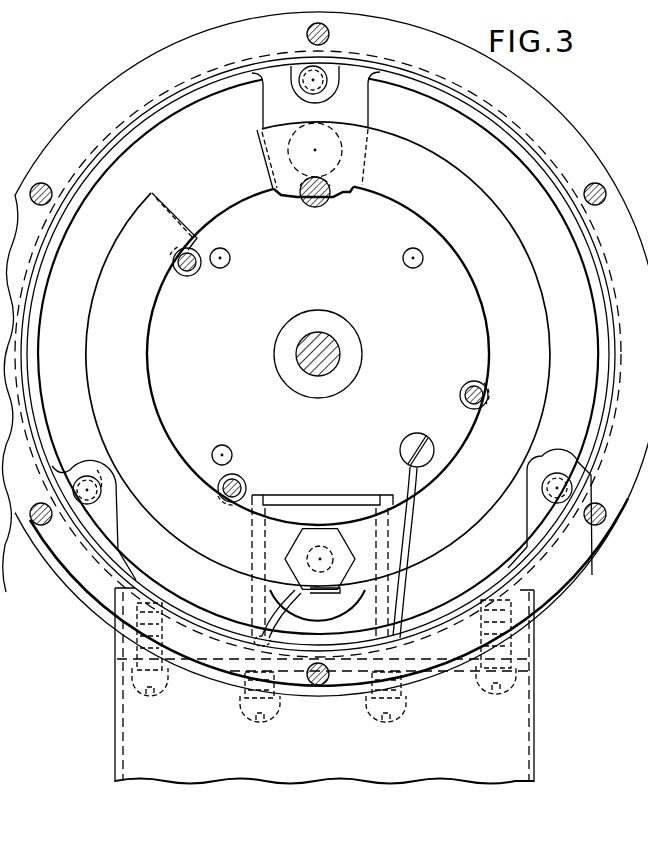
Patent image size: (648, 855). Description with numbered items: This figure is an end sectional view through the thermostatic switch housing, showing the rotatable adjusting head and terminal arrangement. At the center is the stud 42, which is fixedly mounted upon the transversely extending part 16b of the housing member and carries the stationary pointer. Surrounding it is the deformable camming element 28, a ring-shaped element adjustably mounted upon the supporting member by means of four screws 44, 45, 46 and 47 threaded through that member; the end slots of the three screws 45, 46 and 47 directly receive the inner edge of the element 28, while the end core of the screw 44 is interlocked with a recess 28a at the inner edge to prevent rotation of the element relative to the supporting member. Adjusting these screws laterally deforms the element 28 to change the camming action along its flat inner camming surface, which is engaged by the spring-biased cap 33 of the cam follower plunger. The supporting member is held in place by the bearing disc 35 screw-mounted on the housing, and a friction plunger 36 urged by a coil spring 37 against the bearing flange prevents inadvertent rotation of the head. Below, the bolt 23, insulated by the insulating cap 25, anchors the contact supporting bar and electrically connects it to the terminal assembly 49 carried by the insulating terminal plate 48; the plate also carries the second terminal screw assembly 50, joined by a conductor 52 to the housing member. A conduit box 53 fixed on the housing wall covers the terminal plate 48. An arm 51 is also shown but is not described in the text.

The transversely extending part 16b is at (232, 366).
The bolt 23 is at (304, 556).
The insulating cap 25 is at (338, 507).
The deformable camming element 28 is at (318, 346).
The recess 28a is at (356, 183).
The cap 33 is at (372, 134).
The bearing disc 35 is at (574, 572).
The friction plunger 36 is at (90, 476).
The coil spring 37 is at (90, 476).
The stud 42 is at (320, 343).
The screw 44 is at (313, 208).
The screw 45 is at (461, 391).
The screw 46 is at (246, 493).
The screw 47 is at (192, 278).
The insulating terminal plate 48 is at (170, 682).
The terminal assembly 49 is at (300, 700).
The second terminal screw assembly 50 is at (398, 700).
The arm 51 is at (270, 610).
The conductor 52 is at (404, 480).
The conduit box 53 is at (535, 728).